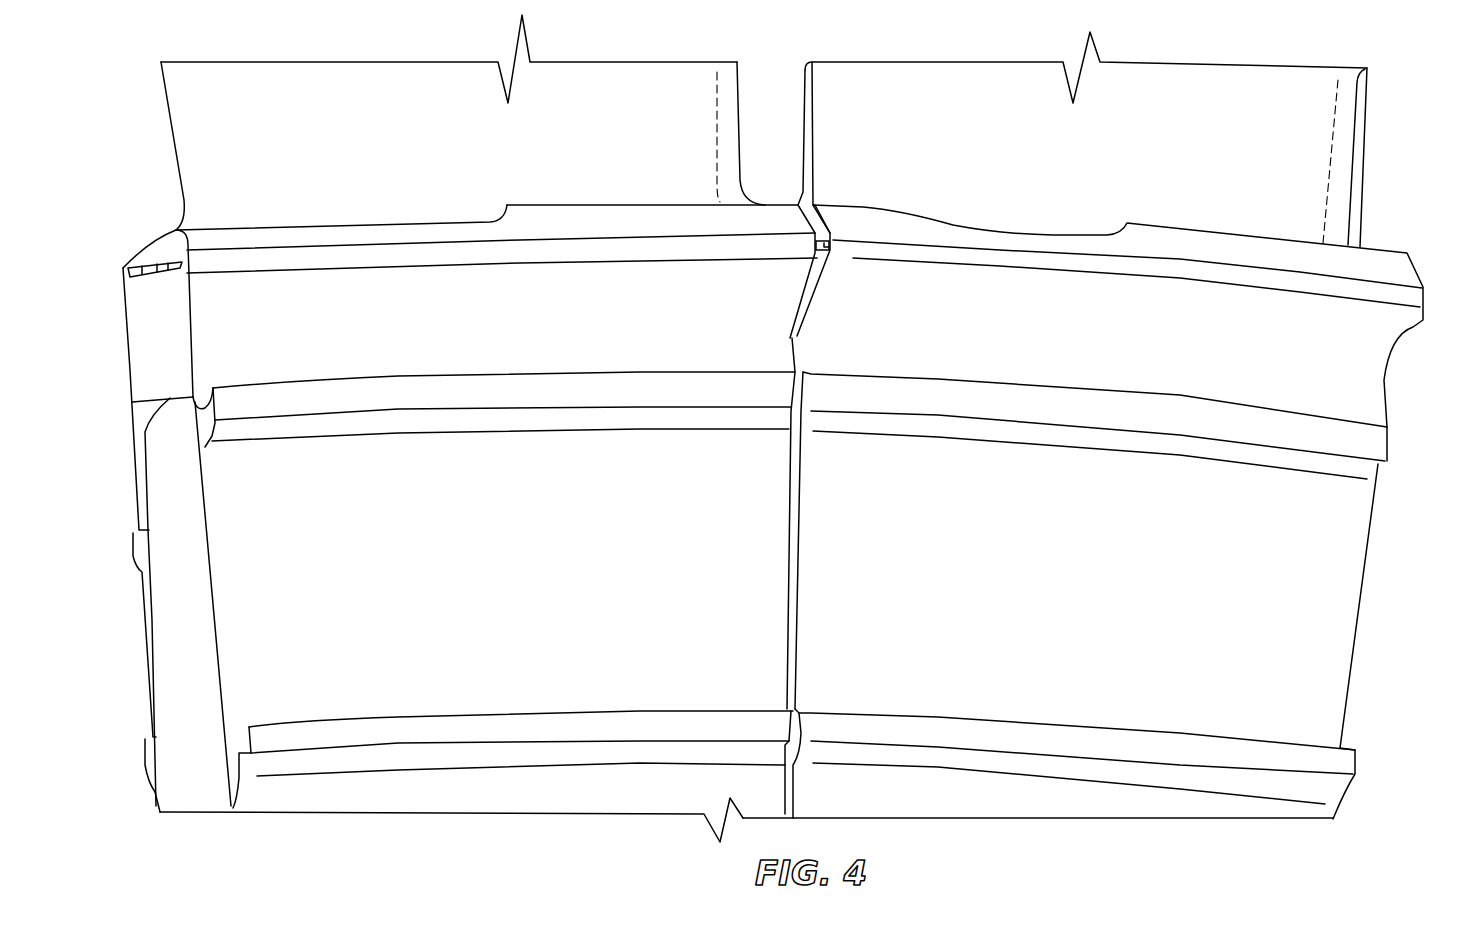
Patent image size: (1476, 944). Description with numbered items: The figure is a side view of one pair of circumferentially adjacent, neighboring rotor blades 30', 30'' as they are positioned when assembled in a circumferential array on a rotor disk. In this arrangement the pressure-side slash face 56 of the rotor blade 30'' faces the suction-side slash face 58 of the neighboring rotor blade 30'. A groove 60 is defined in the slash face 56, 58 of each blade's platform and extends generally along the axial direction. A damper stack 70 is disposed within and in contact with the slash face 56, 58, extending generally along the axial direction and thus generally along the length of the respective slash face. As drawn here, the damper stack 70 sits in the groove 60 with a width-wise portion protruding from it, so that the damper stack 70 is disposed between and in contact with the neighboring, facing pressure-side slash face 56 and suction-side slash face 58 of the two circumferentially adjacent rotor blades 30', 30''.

The rotor blade 30' is at (456, 428).
The rotor blade 30'' is at (1109, 425).
The pressure-side slash face 56 is at (133, 298).
The suction-side slash face 58 is at (813, 207).
The groove 60 is at (155, 259).
The damper stack 70 is at (162, 288).